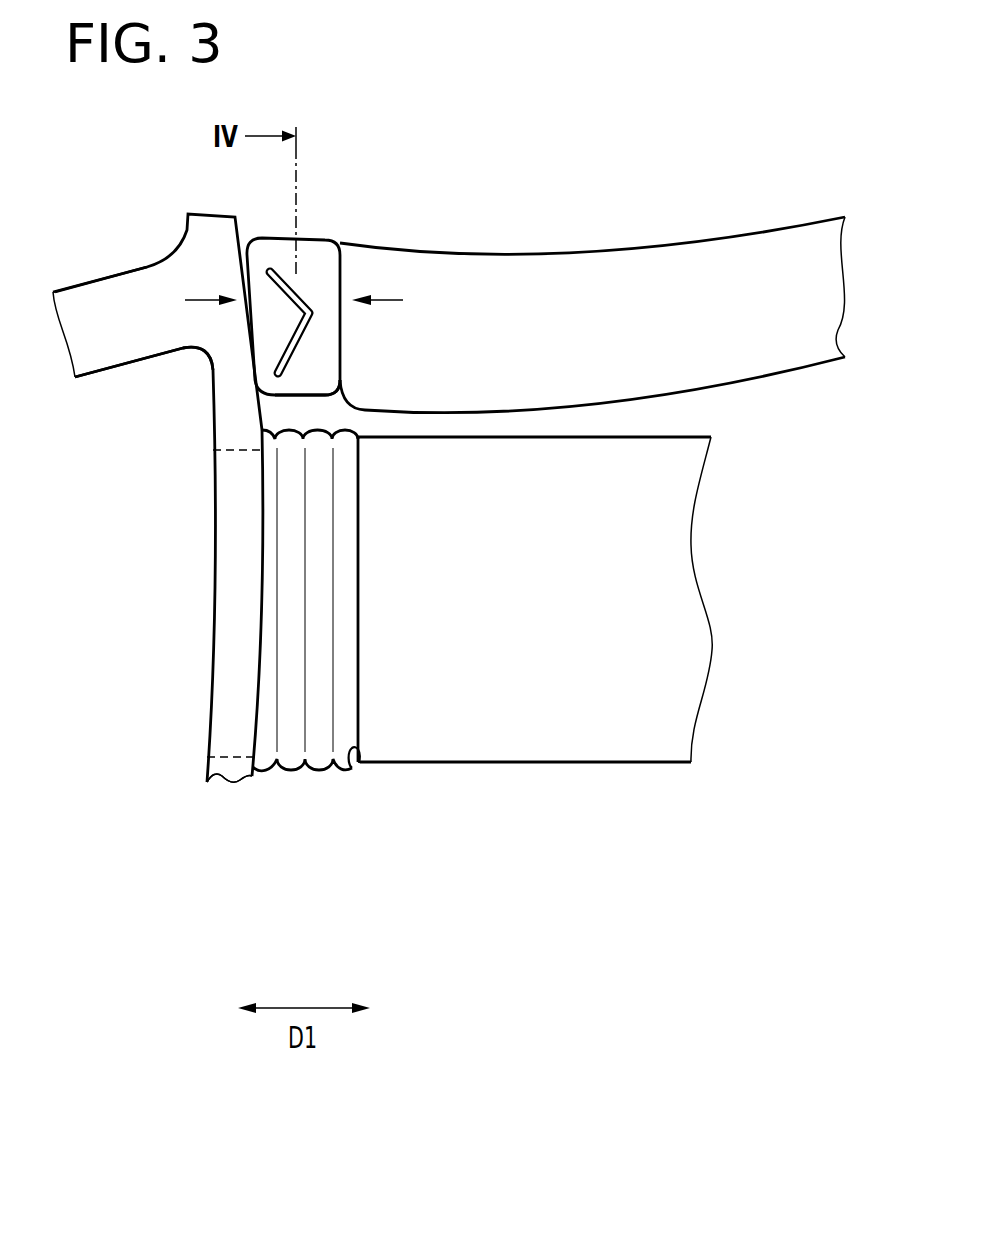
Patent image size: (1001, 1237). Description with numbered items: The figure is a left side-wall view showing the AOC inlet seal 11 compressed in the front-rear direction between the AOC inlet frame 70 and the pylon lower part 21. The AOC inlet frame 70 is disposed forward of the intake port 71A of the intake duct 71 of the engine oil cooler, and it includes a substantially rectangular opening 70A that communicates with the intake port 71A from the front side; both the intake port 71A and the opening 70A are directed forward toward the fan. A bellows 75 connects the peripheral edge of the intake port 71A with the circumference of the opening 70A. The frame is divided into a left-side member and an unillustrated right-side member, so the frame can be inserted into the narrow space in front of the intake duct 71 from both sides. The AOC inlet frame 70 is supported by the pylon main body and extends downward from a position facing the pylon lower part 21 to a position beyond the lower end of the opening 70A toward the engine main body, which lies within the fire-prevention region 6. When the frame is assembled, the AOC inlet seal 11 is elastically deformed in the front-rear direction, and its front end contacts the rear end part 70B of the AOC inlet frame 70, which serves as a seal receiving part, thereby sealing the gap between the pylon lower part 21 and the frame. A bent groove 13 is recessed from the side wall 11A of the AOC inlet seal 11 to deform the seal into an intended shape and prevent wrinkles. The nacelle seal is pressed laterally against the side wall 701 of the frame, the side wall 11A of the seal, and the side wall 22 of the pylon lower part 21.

The fire-prevention region 6 is at (872, 444).
The AOC inlet seal 11 is at (315, 232).
The side wall of the AOC inlet seal 11A is at (322, 360).
The bent groove 13 is at (305, 312).
The pylon lower part 21 is at (613, 252).
The side wall of the pylon lower part 22 is at (760, 258).
The AOC inlet frame 70 is at (172, 258).
The side wall of the AOC inlet frame 701 is at (85, 297).
The opening 70A is at (213, 757).
The rear end part 70B is at (262, 318).
The intake duct 71 is at (626, 762).
The intake port 71A is at (350, 772).
The bellows 75 is at (290, 772).